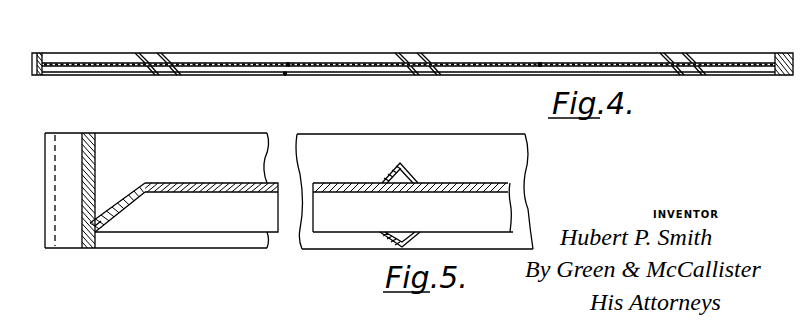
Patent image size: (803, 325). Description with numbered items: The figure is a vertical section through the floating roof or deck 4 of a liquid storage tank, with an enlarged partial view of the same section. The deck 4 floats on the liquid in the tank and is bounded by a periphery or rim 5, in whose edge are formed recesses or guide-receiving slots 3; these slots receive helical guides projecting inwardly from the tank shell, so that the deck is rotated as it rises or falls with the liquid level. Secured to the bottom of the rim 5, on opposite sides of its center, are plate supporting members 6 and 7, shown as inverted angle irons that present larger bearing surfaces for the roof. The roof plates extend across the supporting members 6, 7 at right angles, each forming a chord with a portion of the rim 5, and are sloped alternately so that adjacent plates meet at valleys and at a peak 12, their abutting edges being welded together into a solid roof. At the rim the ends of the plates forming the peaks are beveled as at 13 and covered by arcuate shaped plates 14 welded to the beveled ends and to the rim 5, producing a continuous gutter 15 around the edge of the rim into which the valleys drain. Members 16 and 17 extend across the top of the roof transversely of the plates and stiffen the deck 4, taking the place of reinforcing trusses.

In FIG. 4, the recesses or guide-receiving slots 3 is at (145, 56).
In FIG. 5, the recesses or guide-receiving slots 3 is at (72, 157).
In FIG. 4, the roof or deck 4 is at (395, 101).
In FIG. 4, the rim 5 is at (40, 56).
In FIG. 5, the rim 5 is at (60, 132).
In FIG. 4, the plate supporting member 6 is at (285, 75).
In FIG. 5, the plate supporting member 6 is at (395, 242).
In FIG. 4, the plate supporting member 7 is at (538, 68).
In FIG. 5, the peak 12 is at (225, 186).
In FIG. 4, the beveled end 13 is at (47, 75).
In FIG. 5, the beveled end 13 is at (142, 183).
In FIG. 5, the arcuate shaped plate 14 is at (117, 210).
In FIG. 5, the gutter 15 is at (103, 207).
In FIG. 4, the stiffening member 16 is at (288, 63).
In FIG. 5, the stiffening member 16 is at (405, 166).
In FIG. 4, the stiffening member 17 is at (540, 62).